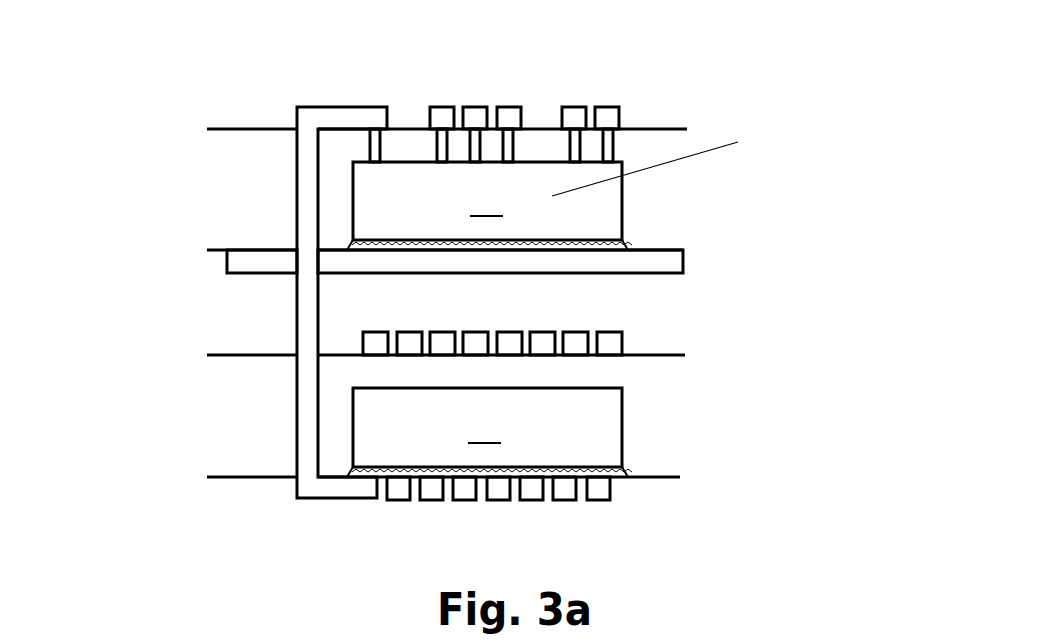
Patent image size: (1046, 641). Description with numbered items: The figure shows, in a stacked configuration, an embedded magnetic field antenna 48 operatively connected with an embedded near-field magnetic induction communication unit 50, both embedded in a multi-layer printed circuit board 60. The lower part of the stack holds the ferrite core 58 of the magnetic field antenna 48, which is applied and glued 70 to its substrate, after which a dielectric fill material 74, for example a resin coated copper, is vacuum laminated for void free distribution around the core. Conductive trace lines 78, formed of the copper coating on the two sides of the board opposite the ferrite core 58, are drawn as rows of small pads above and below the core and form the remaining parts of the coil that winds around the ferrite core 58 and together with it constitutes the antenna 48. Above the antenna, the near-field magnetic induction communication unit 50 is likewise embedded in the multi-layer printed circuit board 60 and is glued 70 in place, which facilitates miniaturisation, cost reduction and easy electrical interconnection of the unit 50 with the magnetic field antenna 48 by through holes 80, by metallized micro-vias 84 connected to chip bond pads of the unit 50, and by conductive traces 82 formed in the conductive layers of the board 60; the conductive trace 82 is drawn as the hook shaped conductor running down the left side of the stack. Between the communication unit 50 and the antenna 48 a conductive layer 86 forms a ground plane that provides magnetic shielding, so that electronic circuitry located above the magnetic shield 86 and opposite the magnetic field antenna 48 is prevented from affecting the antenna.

The magnetic field antenna 48 is at (723, 427).
The near-field magnetic induction communication unit 50 is at (604, 187).
The ferrite core 58 is at (487, 427).
The multi-layer printed circuit board 60 is at (690, 65).
The glue 70 is at (624, 242).
The dielectric fill material 74 is at (266, 222).
The conductive trace lines 78 is at (610, 340).
The through holes 80 is at (297, 373).
The conductive traces 82 is at (340, 113).
The metallized micro-vias 84 is at (375, 148).
The conductive layer 86 is at (675, 263).